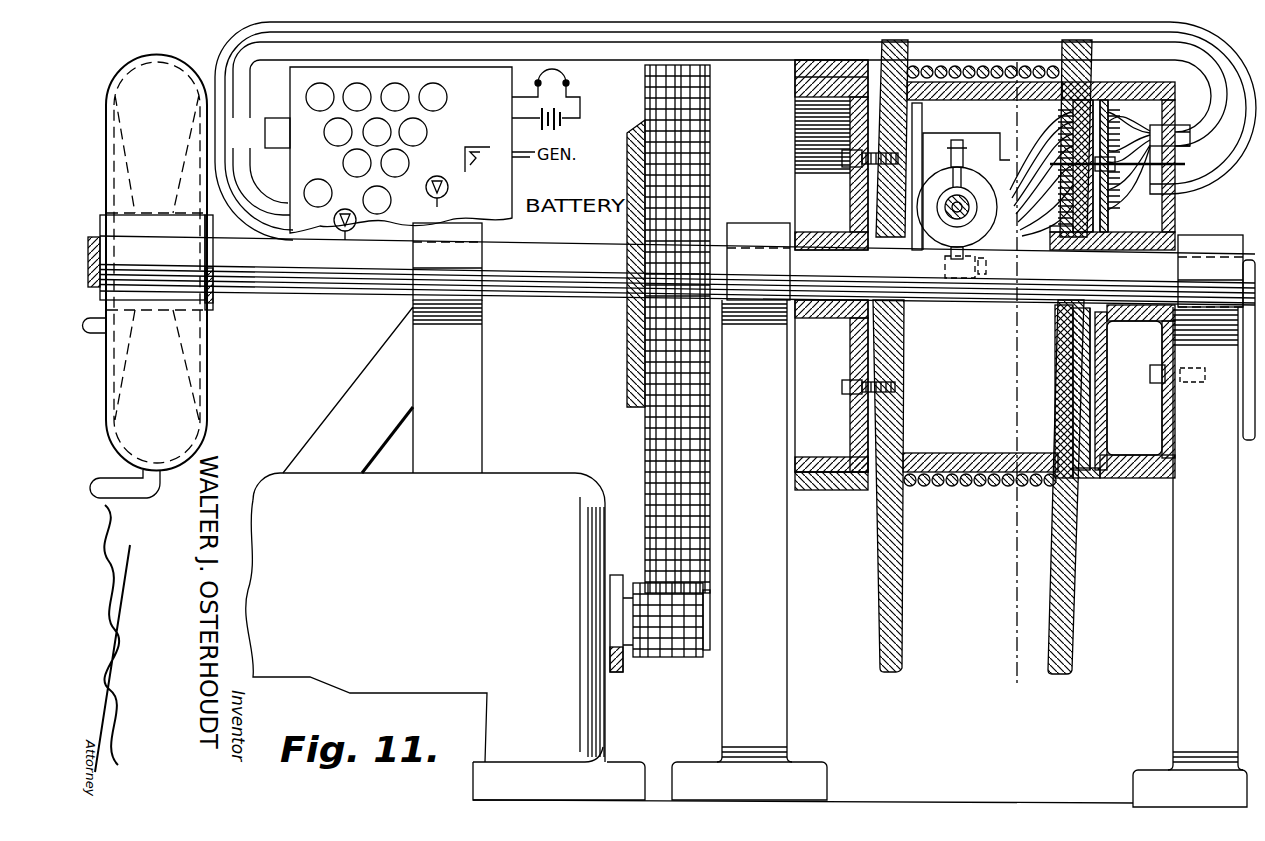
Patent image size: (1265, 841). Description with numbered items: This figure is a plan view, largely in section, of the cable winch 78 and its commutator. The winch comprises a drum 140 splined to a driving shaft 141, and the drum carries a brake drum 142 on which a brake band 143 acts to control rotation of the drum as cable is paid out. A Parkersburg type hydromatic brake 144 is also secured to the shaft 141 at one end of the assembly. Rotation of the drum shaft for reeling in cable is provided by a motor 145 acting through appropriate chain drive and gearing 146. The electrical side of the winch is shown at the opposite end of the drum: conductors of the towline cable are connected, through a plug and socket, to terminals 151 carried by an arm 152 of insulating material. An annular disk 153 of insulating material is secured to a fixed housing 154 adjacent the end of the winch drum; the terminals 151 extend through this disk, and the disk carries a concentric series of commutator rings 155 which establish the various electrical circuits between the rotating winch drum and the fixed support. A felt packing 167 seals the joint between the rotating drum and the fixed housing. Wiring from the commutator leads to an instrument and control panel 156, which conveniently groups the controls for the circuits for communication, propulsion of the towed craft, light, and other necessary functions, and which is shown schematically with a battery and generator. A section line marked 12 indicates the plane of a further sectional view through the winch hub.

The section line 12 is at (1047, 52).
The cable winch 78 is at (1082, 572).
The drum 140 is at (977, 470).
The driving shaft 141 is at (1150, 280).
The brake drum 142 is at (795, 87).
The brake band 143 is at (832, 490).
The hydromatic brake 144 is at (195, 345).
The motor 145 is at (445, 636).
The chain drive and gearing 146 is at (646, 337).
The terminals 151 is at (1109, 166).
The arm 152 is at (1172, 106).
The annular disk 153 is at (1108, 231).
The fixed housing 154 is at (1178, 432).
The commutator rings 155 is at (1098, 362).
The instrument and control panel 156 is at (388, 153).
The felt packing 167 is at (1085, 478).